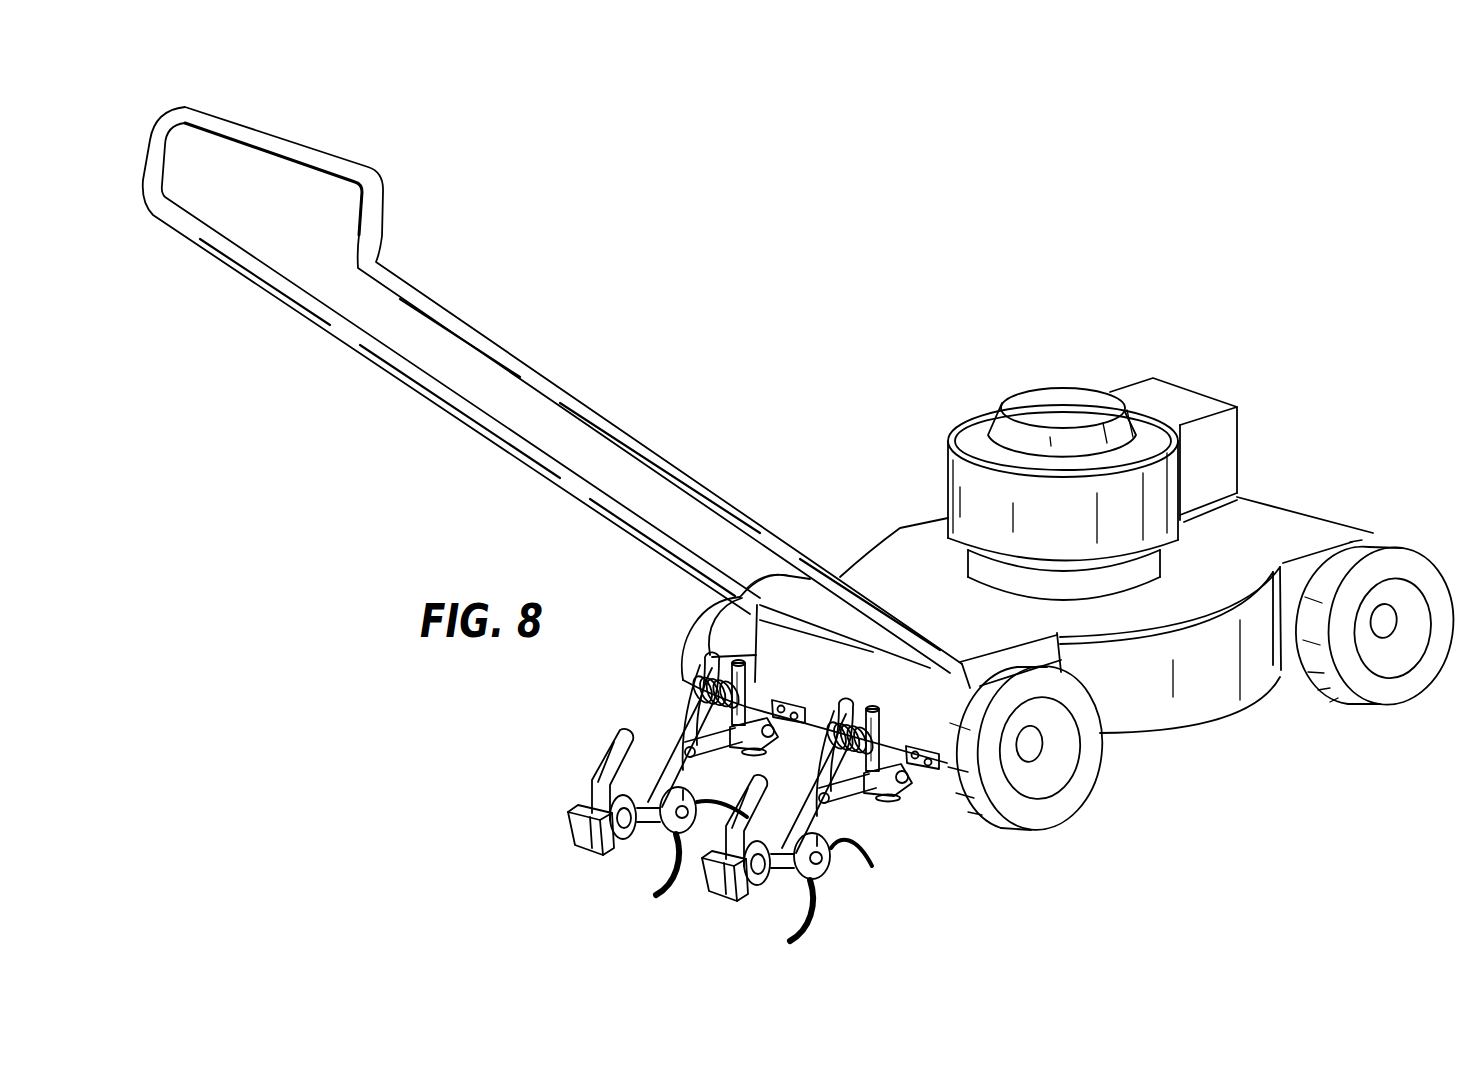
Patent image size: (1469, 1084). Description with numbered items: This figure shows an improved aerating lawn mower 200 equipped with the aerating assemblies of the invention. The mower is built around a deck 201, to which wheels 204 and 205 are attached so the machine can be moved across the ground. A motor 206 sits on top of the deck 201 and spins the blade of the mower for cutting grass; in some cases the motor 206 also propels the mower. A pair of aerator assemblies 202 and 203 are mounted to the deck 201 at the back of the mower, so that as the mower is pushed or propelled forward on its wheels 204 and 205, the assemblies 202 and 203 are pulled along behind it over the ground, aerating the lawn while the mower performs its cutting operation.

The lawn cultivator apparatus 200 is at (1029, 368).
The deck 201 is at (1255, 545).
The aerator assembly 202 is at (578, 756).
The aerator assembly 203 is at (855, 902).
The wheel 204 is at (1393, 690).
The wheel 205 is at (1043, 810).
The motor 206 is at (1175, 388).